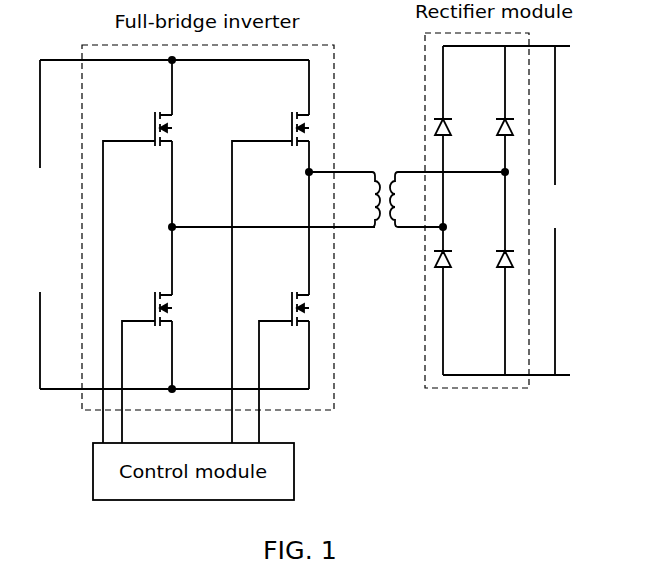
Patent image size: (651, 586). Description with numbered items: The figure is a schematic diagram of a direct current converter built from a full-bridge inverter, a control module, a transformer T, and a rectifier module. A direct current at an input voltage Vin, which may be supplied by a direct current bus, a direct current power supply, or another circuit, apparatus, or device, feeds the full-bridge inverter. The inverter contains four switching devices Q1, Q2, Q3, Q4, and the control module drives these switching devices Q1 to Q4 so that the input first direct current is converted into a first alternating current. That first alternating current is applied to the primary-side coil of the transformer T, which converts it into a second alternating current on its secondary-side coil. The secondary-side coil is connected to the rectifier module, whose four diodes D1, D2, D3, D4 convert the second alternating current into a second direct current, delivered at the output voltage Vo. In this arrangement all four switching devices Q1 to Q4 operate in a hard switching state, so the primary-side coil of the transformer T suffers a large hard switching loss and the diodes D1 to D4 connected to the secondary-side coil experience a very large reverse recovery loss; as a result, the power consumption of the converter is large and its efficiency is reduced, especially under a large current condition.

The switching device Q1 is at (144, 129).
The switching device Q2 is at (144, 309).
The switching device Q3 is at (282, 129).
The switching device Q4 is at (281, 309).
The transformer T is at (373, 199).
The diode D1 is at (457, 113).
The diode D2 is at (490, 141).
The diode D3 is at (457, 271).
The diode D4 is at (492, 245).
The input direct current voltage Vin is at (34, 197).
The output direct current voltage Vo is at (559, 213).